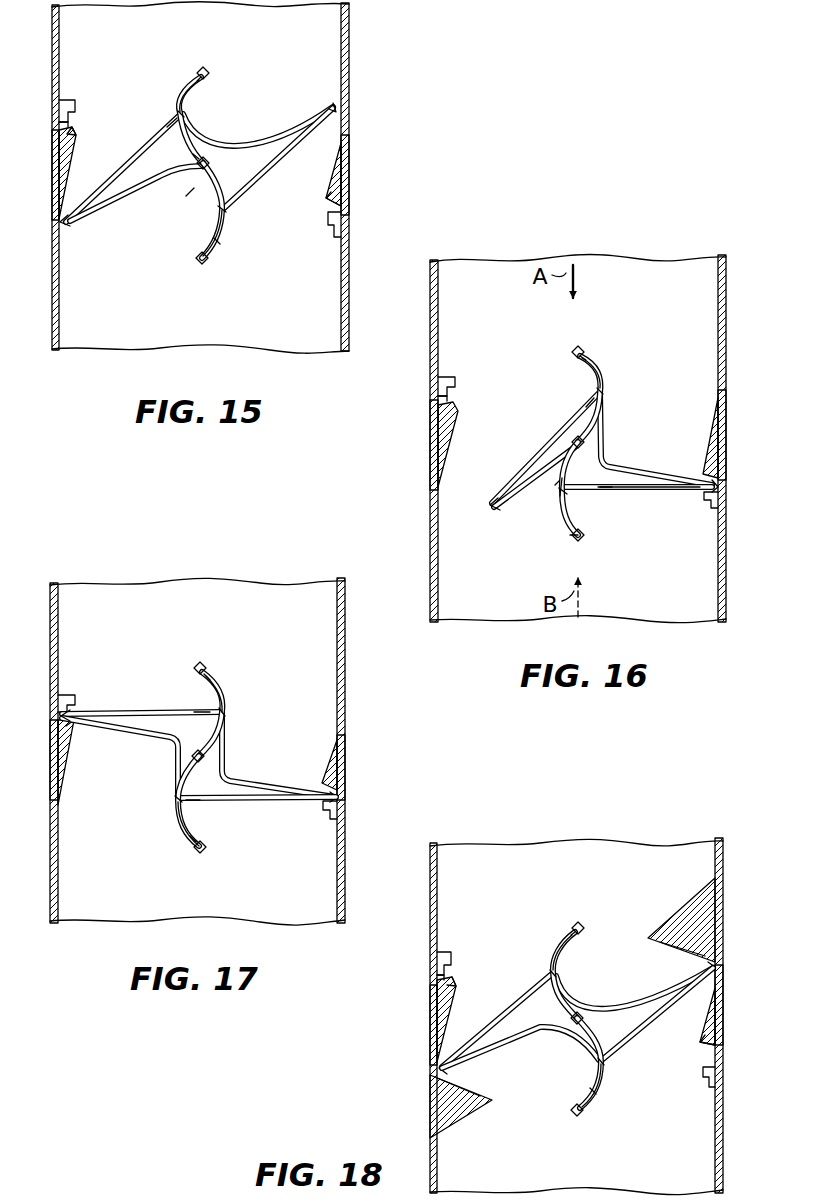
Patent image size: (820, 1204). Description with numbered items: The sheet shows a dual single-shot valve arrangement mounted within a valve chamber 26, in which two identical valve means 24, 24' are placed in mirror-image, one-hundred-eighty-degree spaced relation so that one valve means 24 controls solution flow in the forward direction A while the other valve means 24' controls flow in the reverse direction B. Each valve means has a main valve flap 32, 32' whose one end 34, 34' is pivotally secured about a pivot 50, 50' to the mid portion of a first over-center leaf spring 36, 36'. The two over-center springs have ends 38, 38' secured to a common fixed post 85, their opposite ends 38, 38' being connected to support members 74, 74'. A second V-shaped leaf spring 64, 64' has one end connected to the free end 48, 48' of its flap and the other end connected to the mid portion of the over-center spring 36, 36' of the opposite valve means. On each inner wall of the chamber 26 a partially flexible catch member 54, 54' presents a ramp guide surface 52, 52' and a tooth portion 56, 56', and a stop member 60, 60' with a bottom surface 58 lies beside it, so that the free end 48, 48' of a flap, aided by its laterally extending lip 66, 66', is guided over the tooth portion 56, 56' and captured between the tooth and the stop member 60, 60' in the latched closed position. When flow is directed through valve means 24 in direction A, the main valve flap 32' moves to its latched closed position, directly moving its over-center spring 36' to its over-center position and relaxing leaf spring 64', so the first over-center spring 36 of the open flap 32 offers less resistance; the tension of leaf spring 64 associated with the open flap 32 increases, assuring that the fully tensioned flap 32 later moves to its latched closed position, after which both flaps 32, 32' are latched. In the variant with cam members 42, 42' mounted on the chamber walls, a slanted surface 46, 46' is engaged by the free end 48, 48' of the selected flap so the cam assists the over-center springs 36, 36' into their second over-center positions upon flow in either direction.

In FIG. 15, the valve means 24 is at (145, 92).
In FIG. 16, the valve means 24 is at (537, 361).
In FIG. 17, the valve means 24 is at (154, 673).
In FIG. 18, the valve means 24 is at (527, 934).
In FIG. 15, the valve means (primed) 24' is at (244, 243).
In FIG. 16, the valve means (primed) 24' is at (630, 526).
In FIG. 17, the valve means (primed) 24' is at (237, 836).
In FIG. 18, the valve means (primed) 24' is at (628, 1099).
In FIG. 15, the valve chamber 26 is at (349, 30).
In FIG. 16, the valve chamber 26 is at (727, 291).
In FIG. 17, the valve chamber 26 is at (346, 633).
In FIG. 18, the valve chamber 26 is at (725, 867).
In FIG. 15, the main valve flap 32 is at (123, 168).
In FIG. 16, the main valve flap 32 is at (545, 448).
In FIG. 17, the main valve flap 32 is at (141, 692).
In FIG. 18, the main valve flap 32 is at (497, 1020).
In FIG. 15, the main valve flap (primed) 32' is at (278, 158).
In FIG. 16, the main valve flap (primed) 32' is at (650, 521).
In FIG. 17, the main valve flap (primed) 32' is at (258, 815).
In FIG. 18, the main valve flap (primed) 32' is at (658, 1013).
In FIG. 15, the one end of main valve flap 34 is at (154, 109).
In FIG. 16, the one end of main valve flap 34 is at (565, 396).
In FIG. 17, the one end of main valve flap 34 is at (184, 691).
In FIG. 16, the one end of main valve flap (primed) 34' is at (612, 513).
In FIG. 17, the one end of main valve flap (primed) 34' is at (210, 817).
In FIG. 15, the first over-center leaf spring 36 is at (174, 82).
In FIG. 16, the first over-center leaf spring 36 is at (610, 365).
In FIG. 17, the first over-center leaf spring 36 is at (235, 692).
In FIG. 18, the first over-center leaf spring 36 is at (544, 952).
In FIG. 15, the first over-center leaf spring (primed) 36' is at (239, 233).
In FIG. 16, the first over-center leaf spring (primed) 36' is at (535, 503).
In FIG. 17, the first over-center leaf spring (primed) 36' is at (163, 824).
In FIG. 18, the first over-center leaf spring (primed) 36' is at (616, 1085).
In FIG. 15, the ends of leaf spring 38 is at (194, 122).
In FIG. 16, the ends of leaf spring 38 is at (557, 447).
In FIG. 17, the ends of leaf spring 38 is at (231, 665).
In FIG. 18, the ends of leaf spring 38 is at (550, 927).
In FIG. 15, the ends of leaf spring (primed) 38' is at (209, 228).
In FIG. 17, the ends of leaf spring (primed) 38' is at (164, 847).
In FIG. 18, the ends of leaf spring (primed) 38' is at (613, 1105).
In FIG. 18, the cam member 42 is at (438, 1106).
In FIG. 18, the cam member (primed) 42' is at (712, 920).
In FIG. 18, the slanted surface 46 is at (472, 1075).
In FIG. 18, the slanted surface (primed) 46' is at (669, 960).
In FIG. 16, the free end of valve flap 48 is at (520, 477).
In FIG. 16, the free end of valve flap (primed) 48' is at (637, 508).
In FIG. 15, the pivot 50 is at (203, 107).
In FIG. 16, the pivot 50 is at (622, 380).
In FIG. 17, the pivot 50 is at (245, 711).
In FIG. 18, the pivot 50 is at (578, 959).
In FIG. 15, the pivot (primed) 50' is at (193, 226).
In FIG. 16, the pivot (primed) 50' is at (670, 506).
In FIG. 17, the pivot (primed) 50' is at (153, 787).
In FIG. 18, the pivot (primed) 50' is at (573, 1075).
In FIG. 15, the ramp guide surface 52 is at (44, 173).
In FIG. 16, the ramp guide surface 52 is at (464, 444).
In FIG. 17, the ramp guide surface 52 is at (84, 762).
In FIG. 18, the ramp guide surface 52 is at (420, 1019).
In FIG. 15, the ramp guide surface (primed) 52' is at (364, 173).
In FIG. 16, the ramp guide surface (primed) 52' is at (693, 438).
In FIG. 18, the ramp guide surface (primed) 52' is at (738, 1013).
In FIG. 15, the catch member 54 is at (36, 175).
In FIG. 16, the catch member 54 is at (413, 445).
In FIG. 17, the catch member 54 is at (35, 760).
In FIG. 18, the catch member 54 is at (411, 1025).
In FIG. 15, the catch member (primed) 54' is at (372, 175).
In FIG. 16, the catch member (primed) 54' is at (750, 435).
In FIG. 17, the catch member (primed) 54' is at (367, 767).
In FIG. 18, the catch member (primed) 54' is at (745, 1005).
In FIG. 15, the tooth portion 56 is at (95, 136).
In FIG. 17, the tooth portion 56 is at (91, 736).
In FIG. 18, the tooth portion 56 is at (475, 986).
In FIG. 15, the tooth portion (primed) 56' is at (311, 192).
In FIG. 17, the tooth portion (primed) 56' is at (309, 765).
In FIG. 18, the tooth portion (primed) 56' is at (681, 1049).
In FIG. 15, the bottom surface of stop member 58 is at (76, 119).
In FIG. 16, the bottom surface of stop member 58 is at (456, 391).
In FIG. 18, the bottom surface of stop member 58 is at (455, 962).
In FIG. 15, the stop member 60 is at (77, 90).
In FIG. 16, the stop member 60 is at (455, 361).
In FIG. 17, the stop member 60 is at (78, 677).
In FIG. 18, the stop member 60 is at (457, 940).
In FIG. 15, the stop member (primed) 60' is at (322, 244).
In FIG. 17, the stop member (primed) 60' is at (315, 832).
In FIG. 18, the stop member (primed) 60' is at (697, 1096).
In FIG. 15, the second V-shaped leaf spring 64 is at (135, 193).
In FIG. 16, the second V-shaped leaf spring 64 is at (538, 493).
In FIG. 17, the second V-shaped leaf spring 64 is at (120, 759).
In FIG. 18, the second V-shaped leaf spring 64 is at (520, 1047).
In FIG. 15, the second V-shaped leaf spring (primed) 64' is at (258, 126).
In FIG. 16, the second V-shaped leaf spring (primed) 64' is at (656, 439).
In FIG. 17, the second V-shaped leaf spring (primed) 64' is at (278, 755).
In FIG. 18, the second V-shaped leaf spring (primed) 64' is at (634, 988).
In FIG. 15, the laterally extending lip 66 is at (42, 228).
In FIG. 16, the laterally extending lip 66 is at (478, 525).
In FIG. 17, the laterally extending lip 66 is at (37, 718).
In FIG. 18, the laterally extending lip 66 is at (416, 1068).
In FIG. 15, the laterally extending lip (primed) 66' is at (332, 107).
In FIG. 16, the laterally extending lip (primed) 66' is at (747, 473).
In FIG. 17, the laterally extending lip (primed) 66' is at (363, 786).
In FIG. 18, the laterally extending lip (primed) 66' is at (742, 965).
In FIG. 15, the support member 74 is at (199, 48).
In FIG. 16, the support member 74 is at (595, 334).
In FIG. 17, the support member 74 is at (195, 646).
In FIG. 18, the support member 74 is at (579, 907).
In FIG. 15, the support member (primed) 74' is at (188, 276).
In FIG. 16, the support member (primed) 74' is at (596, 550).
In FIG. 17, the support member (primed) 74' is at (214, 866).
In FIG. 18, the support member (primed) 74' is at (584, 1133).
In FIG. 15, the common fixed post 85 is at (211, 167).
In FIG. 16, the common fixed post 85 is at (580, 452).
In FIG. 17, the common fixed post 85 is at (196, 750).
In FIG. 18, the common fixed post 85 is at (569, 1018).